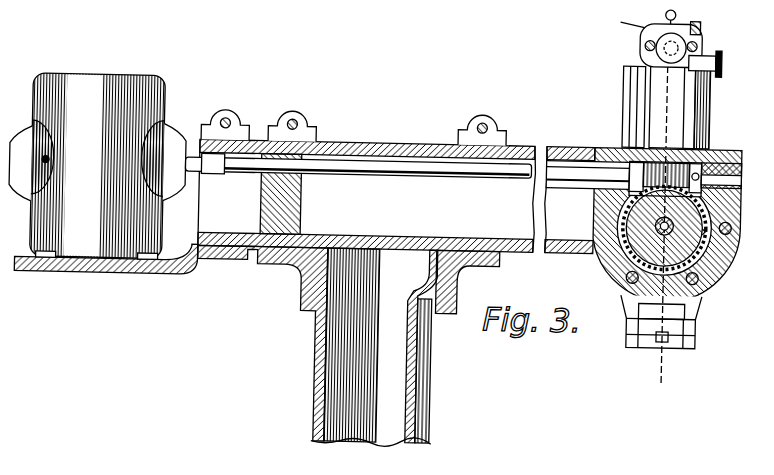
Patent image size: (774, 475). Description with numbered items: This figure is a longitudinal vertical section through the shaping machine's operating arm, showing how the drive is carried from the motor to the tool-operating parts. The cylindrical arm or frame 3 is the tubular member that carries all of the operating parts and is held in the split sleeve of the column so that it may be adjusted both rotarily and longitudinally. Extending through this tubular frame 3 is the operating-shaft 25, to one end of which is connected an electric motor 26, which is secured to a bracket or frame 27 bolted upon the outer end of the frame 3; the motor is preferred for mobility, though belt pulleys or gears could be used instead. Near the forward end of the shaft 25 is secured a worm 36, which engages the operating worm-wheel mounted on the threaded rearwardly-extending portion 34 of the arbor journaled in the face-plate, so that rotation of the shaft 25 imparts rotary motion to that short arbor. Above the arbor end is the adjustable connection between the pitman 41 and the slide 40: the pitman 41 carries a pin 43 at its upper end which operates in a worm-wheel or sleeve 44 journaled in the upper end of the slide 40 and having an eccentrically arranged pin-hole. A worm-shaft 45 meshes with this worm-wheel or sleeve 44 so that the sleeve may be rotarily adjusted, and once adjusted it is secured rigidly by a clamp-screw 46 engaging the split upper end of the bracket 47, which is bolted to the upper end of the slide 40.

The arm or frame 3 is at (468, 281).
The operating-shaft 25 is at (372, 177).
The electric motor 26 is at (98, 166).
The bracket or frame 27 is at (168, 281).
The threaded rearwardly-extending portion 34 is at (664, 228).
The worm 36 is at (716, 158).
The slide 40 is at (707, 100).
The pitman 41 is at (649, 107).
The pin 43 is at (670, 86).
The worm-wheel or sleeve 44 is at (658, 29).
The worm-shaft 45 is at (719, 60).
The clamp-screw 46 is at (697, 22).
The bracket 47 is at (674, 14).